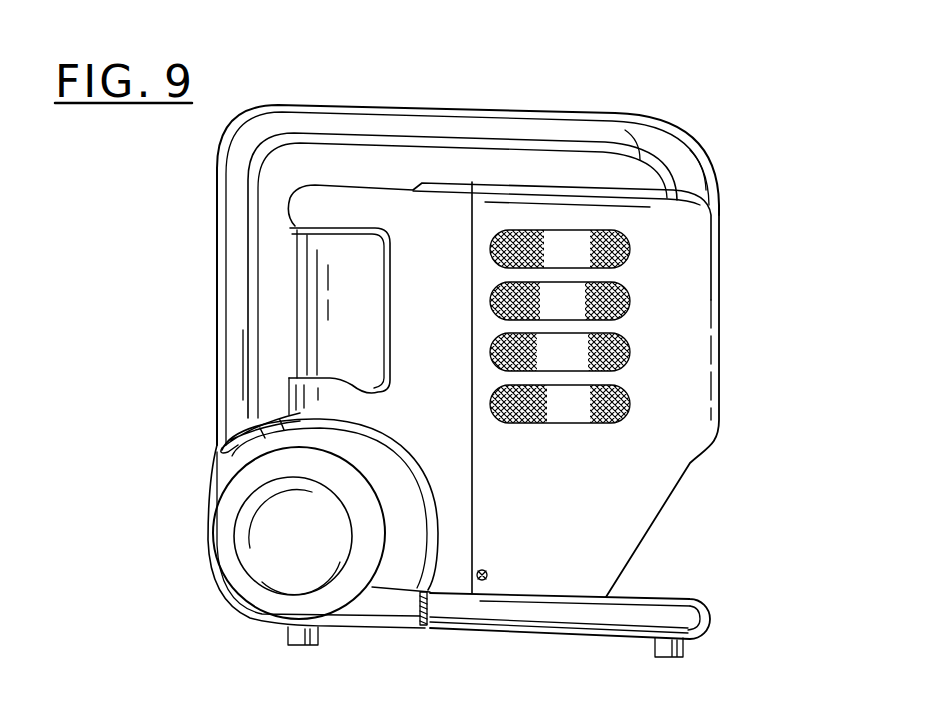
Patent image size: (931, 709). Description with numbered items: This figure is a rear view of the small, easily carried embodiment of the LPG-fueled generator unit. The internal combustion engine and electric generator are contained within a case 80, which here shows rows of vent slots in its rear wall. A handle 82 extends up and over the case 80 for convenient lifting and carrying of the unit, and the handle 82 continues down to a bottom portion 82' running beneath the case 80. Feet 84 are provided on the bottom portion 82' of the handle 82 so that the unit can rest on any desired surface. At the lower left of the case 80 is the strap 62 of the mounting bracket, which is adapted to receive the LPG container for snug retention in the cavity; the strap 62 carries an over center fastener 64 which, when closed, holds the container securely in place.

The strap 62 is at (205, 477).
The over center fastener 64 is at (244, 421).
The case 80 is at (670, 456).
The handle 82 is at (484, 264).
The bottom portion of handle 82' is at (604, 590).
The feet 84 is at (285, 633).